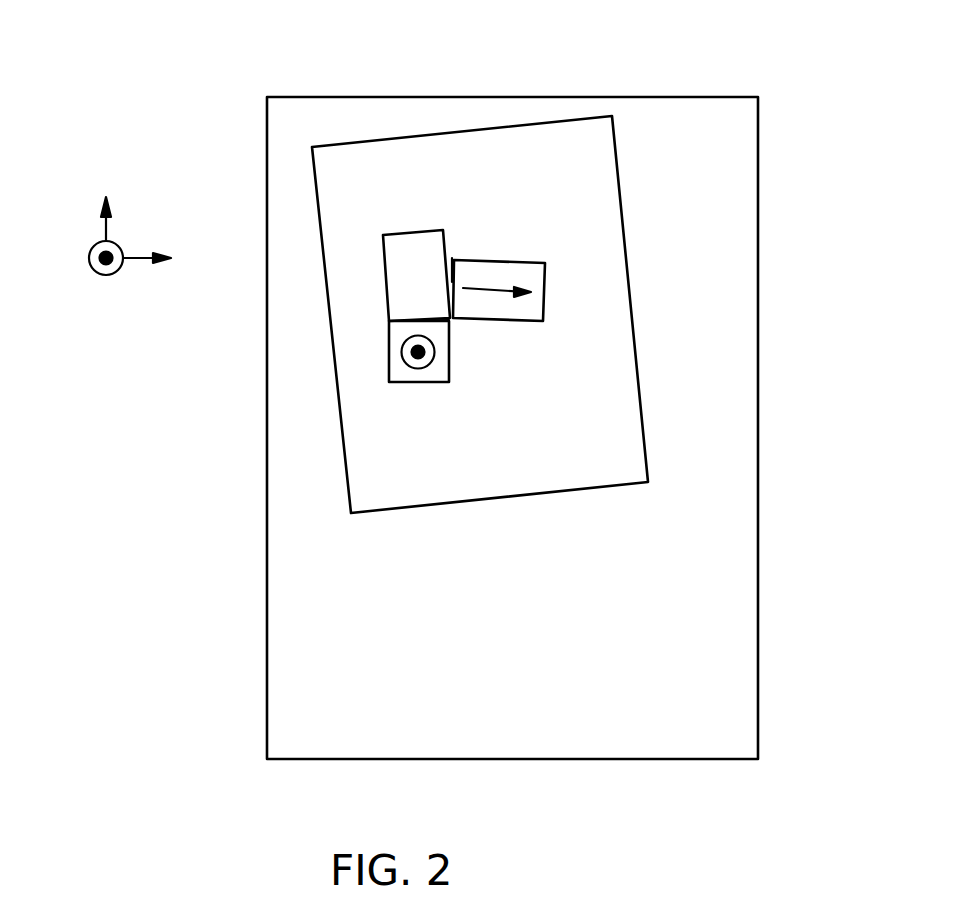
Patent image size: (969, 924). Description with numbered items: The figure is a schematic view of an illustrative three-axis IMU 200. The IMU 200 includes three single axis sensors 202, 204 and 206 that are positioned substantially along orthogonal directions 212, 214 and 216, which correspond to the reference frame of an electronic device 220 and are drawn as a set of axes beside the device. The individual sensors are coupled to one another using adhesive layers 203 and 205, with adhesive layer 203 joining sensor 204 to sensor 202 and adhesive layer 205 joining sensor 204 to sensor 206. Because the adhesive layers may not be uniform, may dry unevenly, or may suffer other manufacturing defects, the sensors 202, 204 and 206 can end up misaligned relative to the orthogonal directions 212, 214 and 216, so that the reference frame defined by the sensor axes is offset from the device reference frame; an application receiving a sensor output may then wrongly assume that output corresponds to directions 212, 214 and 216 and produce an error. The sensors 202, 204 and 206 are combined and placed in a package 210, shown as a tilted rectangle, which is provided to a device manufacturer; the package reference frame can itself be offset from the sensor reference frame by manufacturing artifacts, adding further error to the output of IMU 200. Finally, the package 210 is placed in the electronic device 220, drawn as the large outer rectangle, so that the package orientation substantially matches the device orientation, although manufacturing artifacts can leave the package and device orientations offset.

The IMU 200 is at (681, 68).
The single axis sensor 202 is at (544, 298).
The adhesive layer 203 is at (452, 260).
The single axis sensor 204 is at (423, 233).
The adhesive layer 205 is at (430, 323).
The single axis sensor 206 is at (420, 382).
The package 210 is at (646, 446).
The orthogonal direction 212 is at (138, 259).
The orthogonal direction 214 is at (101, 228).
The orthogonal direction 216 is at (90, 271).
The electronic device 220 is at (758, 727).